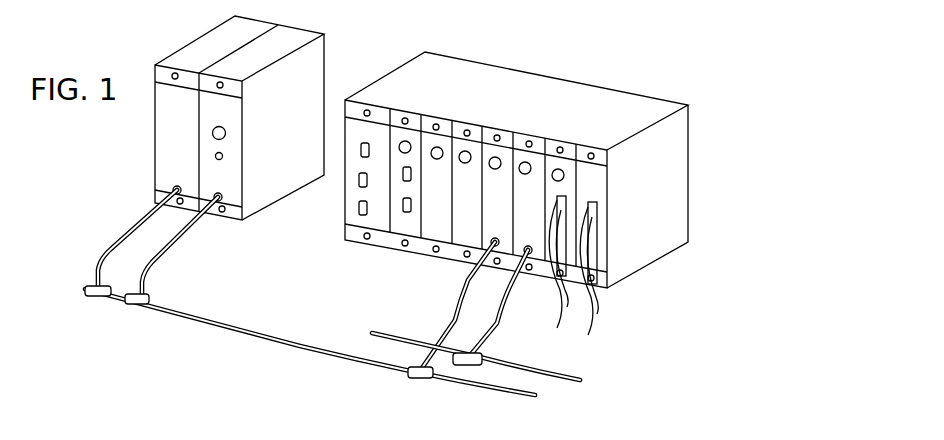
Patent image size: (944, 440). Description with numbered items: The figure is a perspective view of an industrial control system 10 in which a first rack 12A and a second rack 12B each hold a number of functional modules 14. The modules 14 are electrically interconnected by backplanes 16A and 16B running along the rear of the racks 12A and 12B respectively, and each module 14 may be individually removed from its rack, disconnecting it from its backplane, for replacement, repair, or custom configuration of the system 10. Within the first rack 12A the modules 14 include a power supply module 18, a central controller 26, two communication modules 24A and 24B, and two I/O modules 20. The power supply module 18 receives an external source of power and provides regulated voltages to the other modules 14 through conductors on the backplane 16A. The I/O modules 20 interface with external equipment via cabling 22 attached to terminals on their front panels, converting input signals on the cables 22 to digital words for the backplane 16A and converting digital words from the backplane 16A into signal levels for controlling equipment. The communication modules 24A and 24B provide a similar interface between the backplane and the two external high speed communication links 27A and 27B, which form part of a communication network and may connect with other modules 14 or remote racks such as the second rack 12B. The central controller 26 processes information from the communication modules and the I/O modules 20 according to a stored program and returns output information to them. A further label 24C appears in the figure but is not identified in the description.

The industrial control system 10 is at (546, 196).
The first rack 12A is at (673, 212).
The second rack 12B is at (293, 165).
The functional modules 14 is at (200, 84).
The backplane 16A is at (703, 130).
The backplane 16B is at (336, 43).
The power supply module 18 is at (346, 232).
The I/O modules 20 is at (572, 177).
The cabling 22 is at (560, 333).
The communication module 24A is at (233, 188).
The communication module 24B is at (572, 153).
The connector ports 24C is at (178, 128).
The central controller 26 is at (475, 148).
The high speed communication link 27A is at (403, 337).
The high speed communication link 27B is at (305, 343).